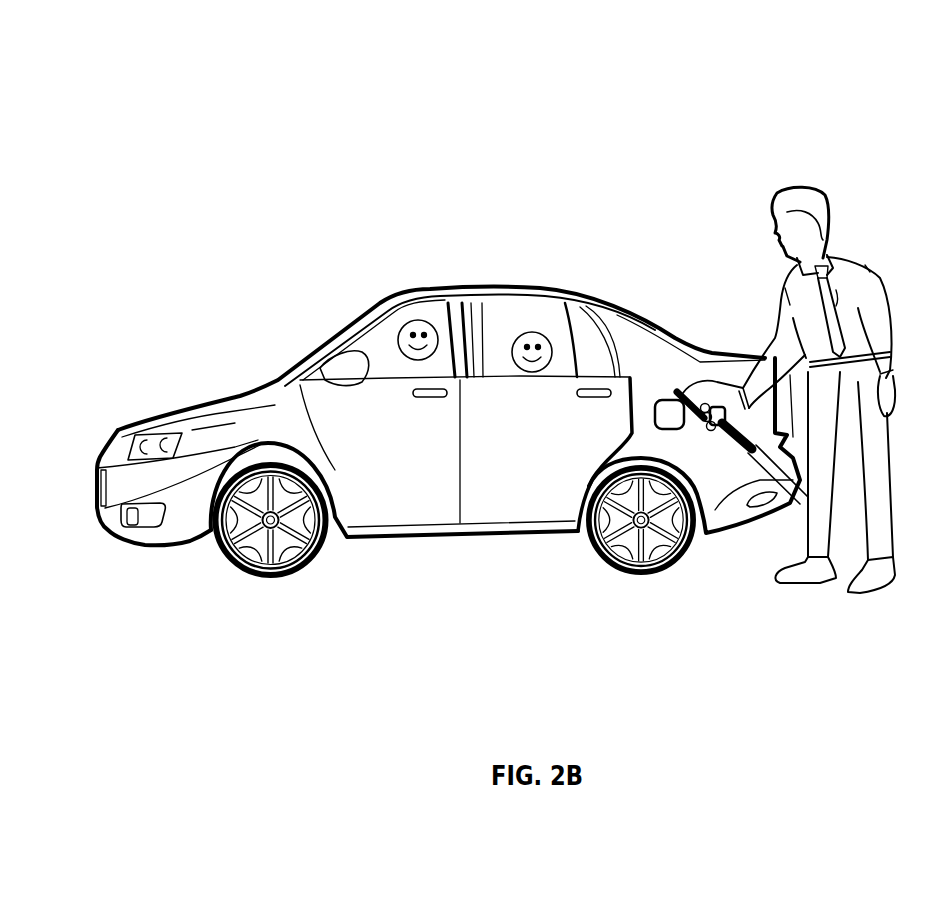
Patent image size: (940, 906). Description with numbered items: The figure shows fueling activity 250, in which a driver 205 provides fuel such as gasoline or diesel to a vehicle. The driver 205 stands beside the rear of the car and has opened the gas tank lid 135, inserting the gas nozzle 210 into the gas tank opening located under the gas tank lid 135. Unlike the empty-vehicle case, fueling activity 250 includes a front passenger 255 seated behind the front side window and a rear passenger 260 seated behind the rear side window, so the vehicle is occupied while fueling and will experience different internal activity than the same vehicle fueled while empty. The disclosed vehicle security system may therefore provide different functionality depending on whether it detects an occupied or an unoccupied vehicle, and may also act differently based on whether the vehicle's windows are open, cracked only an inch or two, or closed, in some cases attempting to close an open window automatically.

The fueling activity 250 is at (778, 91).
The driver 205 is at (873, 267).
The front passenger 255 is at (433, 326).
The rear passenger 260 is at (537, 333).
The gas tank lid 135 is at (668, 405).
The gas nozzle 210 is at (700, 413).